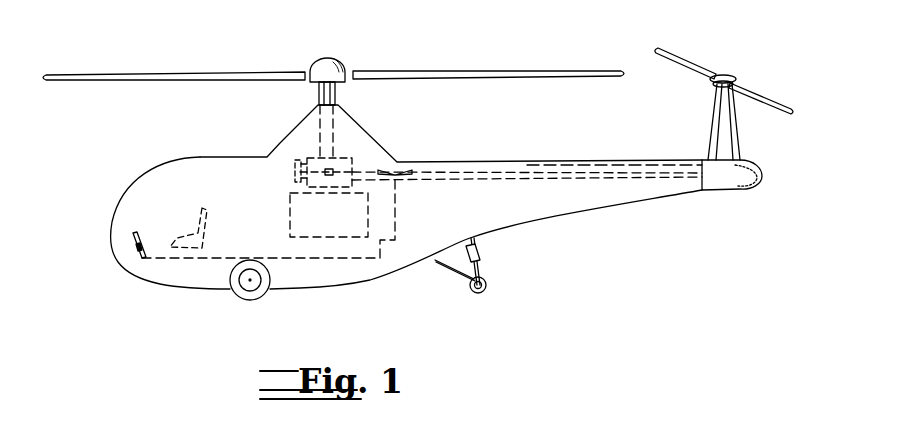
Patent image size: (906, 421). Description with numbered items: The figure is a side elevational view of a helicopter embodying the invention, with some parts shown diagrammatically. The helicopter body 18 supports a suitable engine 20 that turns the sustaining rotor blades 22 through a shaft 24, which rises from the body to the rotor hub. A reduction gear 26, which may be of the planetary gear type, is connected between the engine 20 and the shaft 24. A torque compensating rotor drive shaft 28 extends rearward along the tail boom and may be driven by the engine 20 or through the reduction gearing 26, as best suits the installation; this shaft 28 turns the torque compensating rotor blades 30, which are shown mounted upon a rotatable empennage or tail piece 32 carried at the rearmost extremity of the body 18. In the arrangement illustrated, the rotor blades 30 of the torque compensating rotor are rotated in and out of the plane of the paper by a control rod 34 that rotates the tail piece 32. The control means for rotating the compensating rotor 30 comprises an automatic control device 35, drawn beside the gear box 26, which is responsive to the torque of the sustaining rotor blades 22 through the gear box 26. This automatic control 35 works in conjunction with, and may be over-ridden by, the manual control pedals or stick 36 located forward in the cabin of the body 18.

The helicopter body 18 is at (199, 150).
The engine 20 is at (338, 224).
The sustaining rotor blades 22 is at (296, 66).
The shaft 24 is at (340, 90).
The reduction gear 26 is at (352, 160).
The torque compensating rotor drive shaft 28 is at (450, 182).
The torque compensating rotor blades 30 is at (712, 66).
The tail piece 32 is at (748, 167).
The control rod 34 is at (526, 164).
The automatic control device 35 is at (289, 177).
The manual control pedals or stick 36 is at (138, 237).